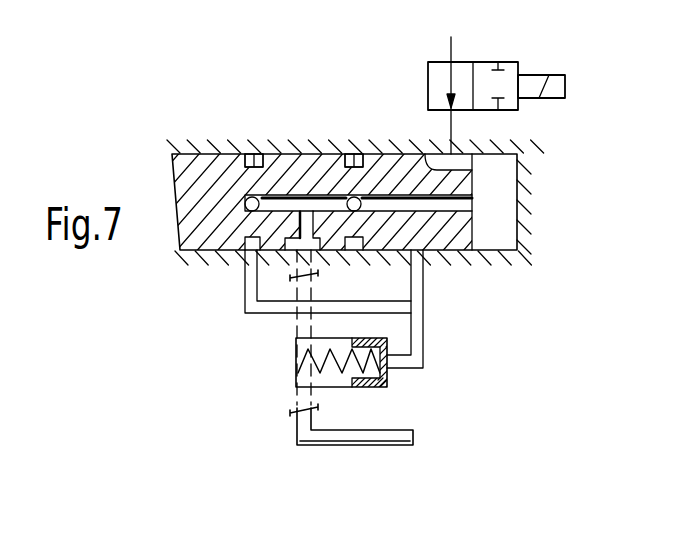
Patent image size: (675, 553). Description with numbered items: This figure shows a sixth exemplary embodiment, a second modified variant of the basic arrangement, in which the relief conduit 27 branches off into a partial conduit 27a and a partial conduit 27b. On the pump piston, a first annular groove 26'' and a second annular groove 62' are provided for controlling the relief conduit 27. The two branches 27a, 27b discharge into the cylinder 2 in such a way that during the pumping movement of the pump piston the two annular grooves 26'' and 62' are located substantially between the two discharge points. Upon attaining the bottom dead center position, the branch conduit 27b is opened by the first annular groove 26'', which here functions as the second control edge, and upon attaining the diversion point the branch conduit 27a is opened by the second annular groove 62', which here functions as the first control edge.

The cylinder 2 is at (499, 242).
The first annular groove 26'' is at (251, 133).
The second annular groove 62' is at (344, 133).
The relief conduit 27 is at (414, 357).
The partial conduit 27a is at (415, 288).
The partial conduit 27b is at (249, 284).